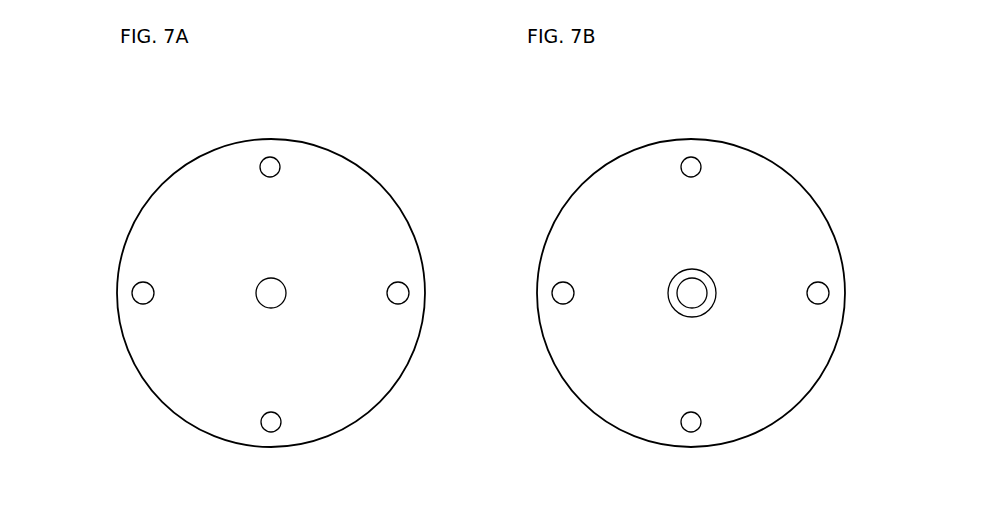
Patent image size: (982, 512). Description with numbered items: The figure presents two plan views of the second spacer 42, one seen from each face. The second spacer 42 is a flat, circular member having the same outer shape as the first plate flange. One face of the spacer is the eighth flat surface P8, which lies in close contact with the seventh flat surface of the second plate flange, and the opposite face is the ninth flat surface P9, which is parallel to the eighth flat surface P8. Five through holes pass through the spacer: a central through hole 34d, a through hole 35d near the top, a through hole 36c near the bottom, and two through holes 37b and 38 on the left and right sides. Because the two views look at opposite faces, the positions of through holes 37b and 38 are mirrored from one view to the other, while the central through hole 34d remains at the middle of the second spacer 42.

In FIG. 7A, the second spacer 42 is at (122, 153).
In FIG. 7B, the second spacer 42 is at (572, 153).
In FIG. 7A, the through hole 35d is at (281, 166).
In FIG. 7B, the through hole 35d is at (702, 166).
In FIG. 7A, the through hole 37b is at (132, 297).
In FIG. 7B, the through hole 37b is at (829, 292).
In FIG. 7A, the through hole 38 is at (409, 292).
In FIG. 7B, the through hole 38 is at (553, 300).
In FIG. 7A, the through hole 34d is at (271, 300).
In FIG. 7B, the through hole 34d is at (703, 300).
In FIG. 7A, the through hole 36c is at (261, 423).
In FIG. 7B, the through hole 36c is at (681, 423).
In FIG. 7A, the eighth flat surface P8 is at (358, 405).
In FIG. 7B, the ninth flat surface P9 is at (768, 407).